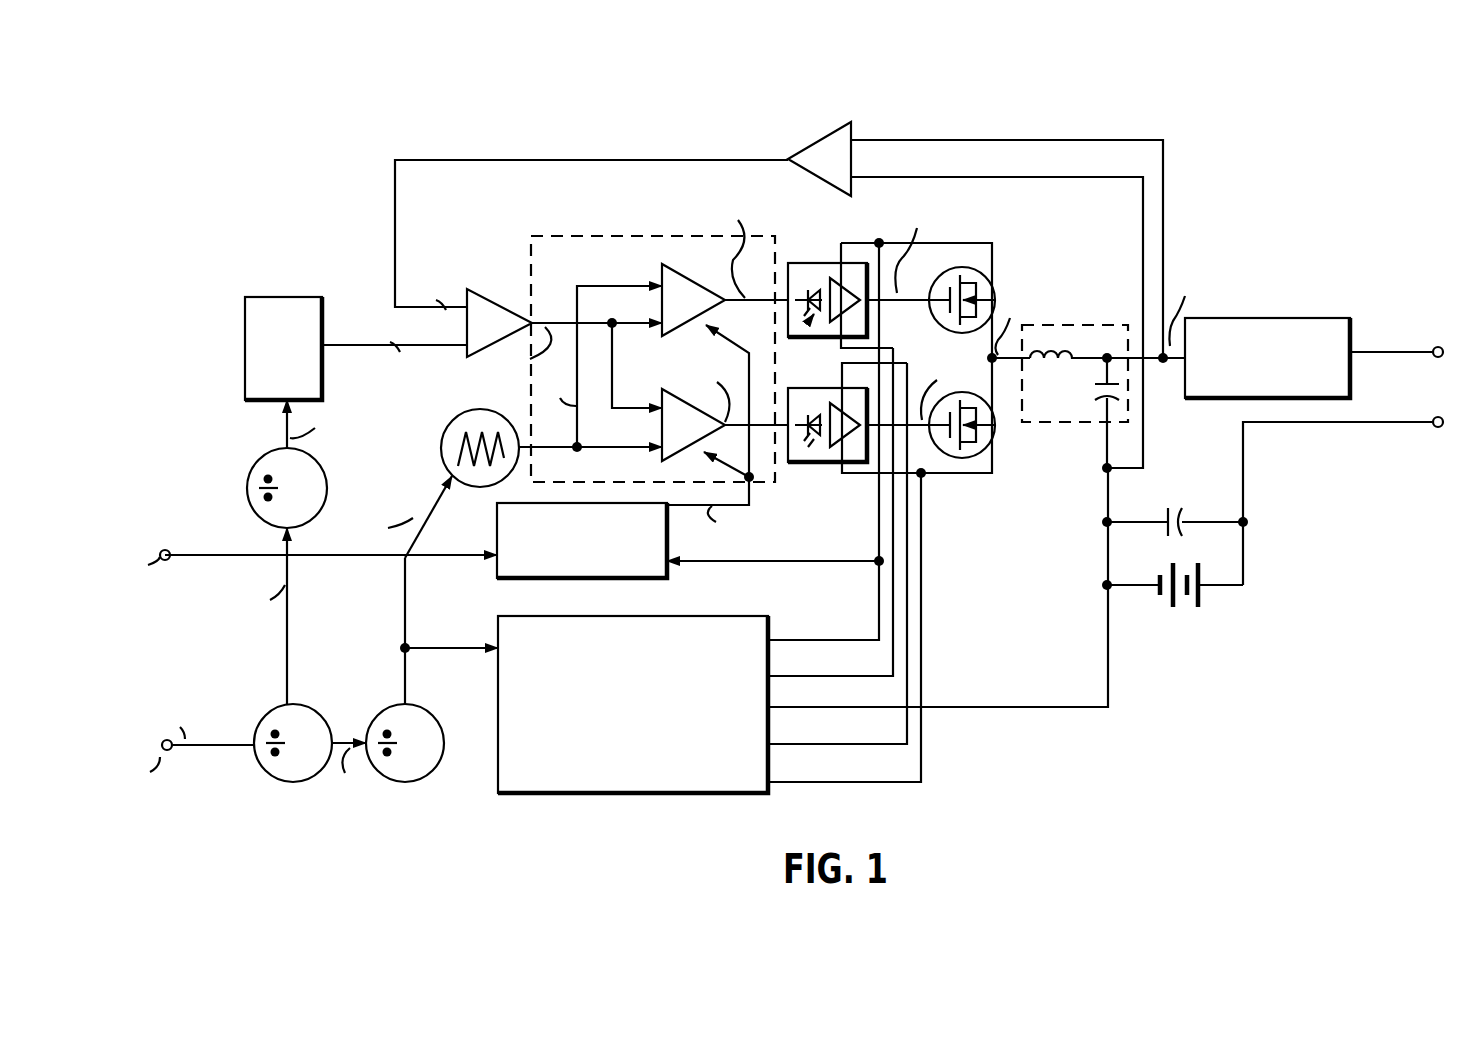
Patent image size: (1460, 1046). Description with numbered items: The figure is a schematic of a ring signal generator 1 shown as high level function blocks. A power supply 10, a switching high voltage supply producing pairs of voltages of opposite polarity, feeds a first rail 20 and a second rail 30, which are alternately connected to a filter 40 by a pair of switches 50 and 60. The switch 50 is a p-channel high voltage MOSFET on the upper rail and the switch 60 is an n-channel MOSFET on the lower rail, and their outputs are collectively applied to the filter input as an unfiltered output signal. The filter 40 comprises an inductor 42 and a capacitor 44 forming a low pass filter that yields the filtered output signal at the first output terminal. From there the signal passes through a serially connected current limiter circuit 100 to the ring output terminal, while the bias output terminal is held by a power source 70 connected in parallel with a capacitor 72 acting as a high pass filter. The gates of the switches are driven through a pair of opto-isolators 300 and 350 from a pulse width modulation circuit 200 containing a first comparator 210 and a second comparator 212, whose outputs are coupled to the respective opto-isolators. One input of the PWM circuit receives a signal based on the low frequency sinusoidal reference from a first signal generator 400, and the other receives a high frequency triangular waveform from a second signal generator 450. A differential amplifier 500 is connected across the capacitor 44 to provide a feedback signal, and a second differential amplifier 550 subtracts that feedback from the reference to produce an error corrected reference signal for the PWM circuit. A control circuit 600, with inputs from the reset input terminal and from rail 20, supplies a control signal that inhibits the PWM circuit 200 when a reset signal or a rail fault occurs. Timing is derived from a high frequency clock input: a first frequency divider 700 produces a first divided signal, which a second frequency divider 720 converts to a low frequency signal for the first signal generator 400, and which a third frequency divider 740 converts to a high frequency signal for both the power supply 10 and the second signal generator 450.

The ring signal generator 1 is at (408, 108).
The power supply 10 is at (624, 704).
The first rail 20 is at (930, 243).
The second rail 30 is at (967, 474).
The filter 40 is at (1090, 325).
The inductor 42 is at (1053, 348).
The capacitor 44 is at (1093, 390).
The first switch 50 is at (978, 285).
The second switch 60 is at (978, 448).
The power source 70 is at (1182, 608).
The capacitor 72 is at (1193, 490).
The current limiter circuit 100 is at (1258, 312).
The pulse width modulation circuit 200 is at (560, 237).
The first comparator 210 is at (671, 268).
The second comparator 212 is at (671, 394).
The first opto-isolator 300 is at (831, 262).
The second opto-isolator 350 is at (795, 466).
The first signal generator 400 is at (308, 296).
The second signal generator 450 is at (449, 437).
The differential amplifier 500 is at (823, 138).
The second differential amplifier 550 is at (505, 300).
The control circuit 600 is at (522, 540).
The first frequency divider 700 is at (280, 704).
The second frequency divider 720 is at (251, 474).
The third frequency divider 740 is at (390, 704).